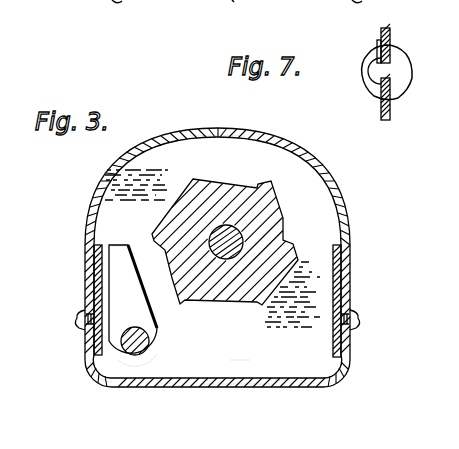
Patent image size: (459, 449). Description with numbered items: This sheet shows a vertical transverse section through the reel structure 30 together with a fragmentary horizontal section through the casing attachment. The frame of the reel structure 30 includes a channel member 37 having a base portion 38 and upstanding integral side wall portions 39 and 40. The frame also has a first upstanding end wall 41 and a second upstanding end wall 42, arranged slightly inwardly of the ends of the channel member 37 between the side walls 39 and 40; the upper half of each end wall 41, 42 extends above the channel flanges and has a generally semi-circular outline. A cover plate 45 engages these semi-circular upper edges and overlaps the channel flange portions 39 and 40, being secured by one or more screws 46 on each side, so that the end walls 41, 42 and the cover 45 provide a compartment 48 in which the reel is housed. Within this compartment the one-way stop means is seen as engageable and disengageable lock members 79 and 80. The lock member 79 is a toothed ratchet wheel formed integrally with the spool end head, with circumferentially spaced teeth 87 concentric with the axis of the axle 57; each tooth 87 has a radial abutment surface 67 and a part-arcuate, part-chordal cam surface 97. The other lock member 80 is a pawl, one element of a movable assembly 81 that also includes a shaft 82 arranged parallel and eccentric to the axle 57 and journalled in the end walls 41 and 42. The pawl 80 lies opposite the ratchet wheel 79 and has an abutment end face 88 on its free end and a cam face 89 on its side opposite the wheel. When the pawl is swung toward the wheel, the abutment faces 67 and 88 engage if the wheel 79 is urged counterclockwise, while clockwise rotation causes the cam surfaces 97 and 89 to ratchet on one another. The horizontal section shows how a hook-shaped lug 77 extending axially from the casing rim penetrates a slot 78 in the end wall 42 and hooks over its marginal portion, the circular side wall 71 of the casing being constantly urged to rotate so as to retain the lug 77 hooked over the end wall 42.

In FIG. 3, the reel structure 30 is at (299, 146).
In FIG. 3, the channel member 37 is at (92, 372).
In FIG. 3, the base portion 38 is at (236, 386).
In FIG. 3, the side wall portion 39 is at (85, 262).
In FIG. 3, the side wall portion 40 is at (343, 263).
In FIG. 3, the first upstanding end wall 41 is at (246, 366).
In FIG. 7, the second upstanding end wall 42 is at (391, 118).
In FIG. 3, the cover plate 45 is at (236, 130).
In FIG. 3, the screw 46 is at (76, 324).
In FIG. 3, the compartment 48 is at (277, 358).
In FIG. 3, the axle 57 is at (240, 243).
In FIG. 3, the radial abutment surface 67 is at (195, 179).
In FIG. 7, the circular side wall 71 is at (403, 93).
In FIG. 7, the hook-shaped lug 77 is at (372, 80).
In FIG. 7, the slot 78 is at (392, 56).
In FIG. 3, the lock member 79 is at (234, 224).
In FIG. 3, the lock member 80 is at (132, 284).
In FIG. 3, the movable assembly 81 is at (164, 348).
In FIG. 3, the shaft 82 is at (150, 335).
In FIG. 3, the tooth 87 is at (213, 181).
In FIG. 3, the abutment end face 88 is at (125, 245).
In FIG. 3, the cam face 89 is at (148, 256).
In FIG. 3, the cam surface 97 is at (257, 186).